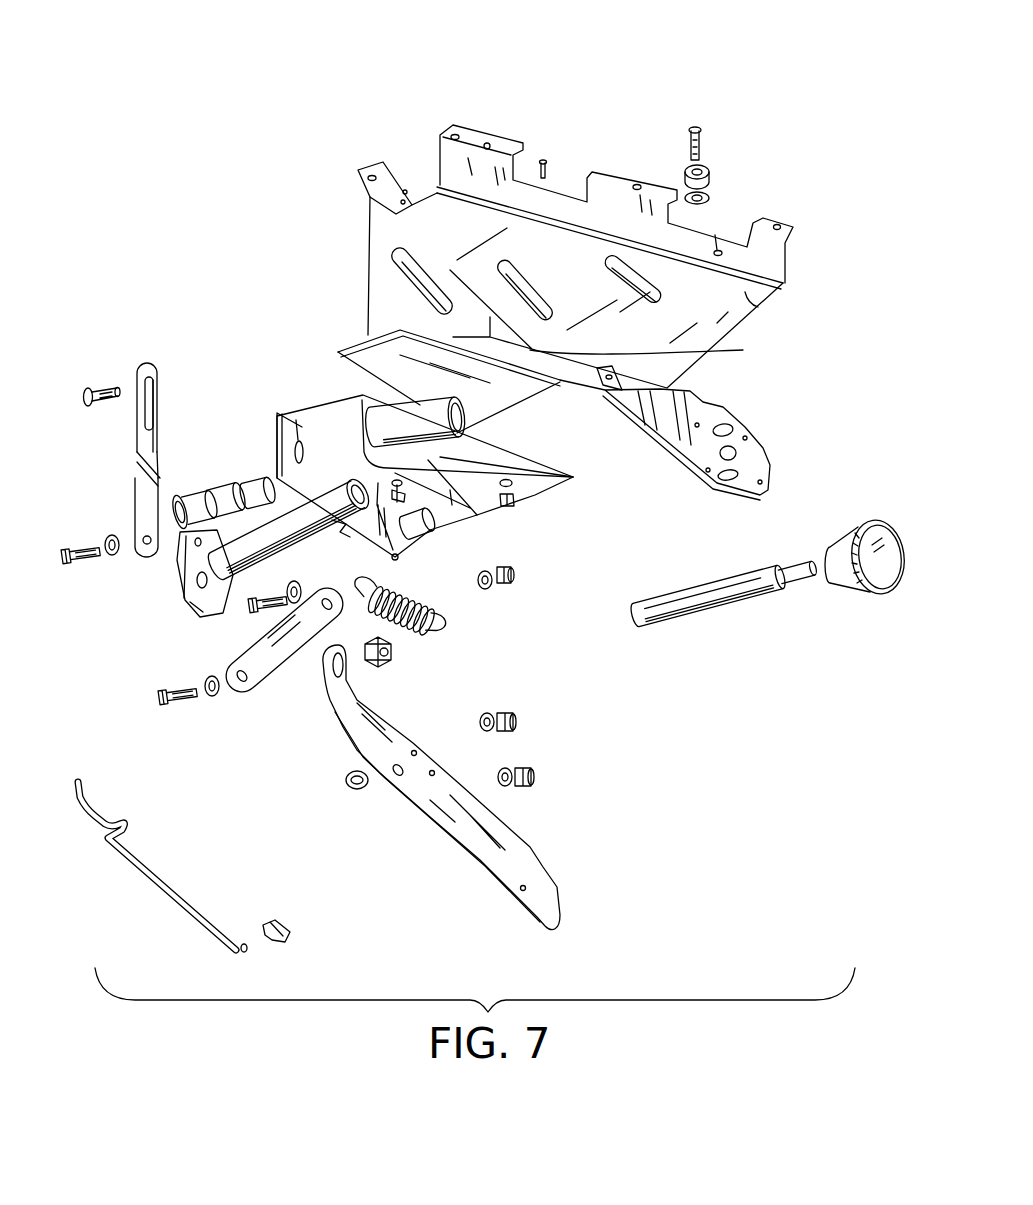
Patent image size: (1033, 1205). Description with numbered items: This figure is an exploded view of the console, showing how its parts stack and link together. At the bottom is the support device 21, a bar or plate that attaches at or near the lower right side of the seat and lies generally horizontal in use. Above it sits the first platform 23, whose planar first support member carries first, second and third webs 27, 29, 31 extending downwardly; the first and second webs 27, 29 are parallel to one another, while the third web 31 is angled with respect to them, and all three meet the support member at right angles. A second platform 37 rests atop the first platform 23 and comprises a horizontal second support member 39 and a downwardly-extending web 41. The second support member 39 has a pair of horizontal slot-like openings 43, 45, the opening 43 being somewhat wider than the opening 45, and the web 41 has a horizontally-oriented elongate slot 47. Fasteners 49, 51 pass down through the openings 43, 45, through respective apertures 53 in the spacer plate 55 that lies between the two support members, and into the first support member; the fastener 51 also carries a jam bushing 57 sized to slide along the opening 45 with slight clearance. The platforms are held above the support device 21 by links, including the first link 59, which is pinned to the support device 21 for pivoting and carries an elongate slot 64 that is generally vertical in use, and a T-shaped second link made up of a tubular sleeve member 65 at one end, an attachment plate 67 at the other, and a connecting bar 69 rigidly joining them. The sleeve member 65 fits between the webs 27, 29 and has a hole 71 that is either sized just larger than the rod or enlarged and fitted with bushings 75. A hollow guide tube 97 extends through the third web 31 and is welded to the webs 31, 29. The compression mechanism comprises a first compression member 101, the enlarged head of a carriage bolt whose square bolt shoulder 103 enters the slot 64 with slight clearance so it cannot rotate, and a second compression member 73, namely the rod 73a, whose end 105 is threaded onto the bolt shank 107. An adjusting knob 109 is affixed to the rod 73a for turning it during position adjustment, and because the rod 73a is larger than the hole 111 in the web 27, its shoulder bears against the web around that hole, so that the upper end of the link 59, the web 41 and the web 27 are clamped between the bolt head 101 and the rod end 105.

The support device 21 is at (492, 857).
The first platform 23 is at (567, 470).
The first web 27 is at (455, 479).
The second web 29 is at (520, 507).
The third web 31 is at (543, 455).
The second platform 37 is at (575, 256).
The second support member 39 is at (758, 307).
The web 41 is at (377, 228).
The opening 43 is at (535, 300).
The opening 45 is at (650, 292).
The elongate slot 47 is at (395, 265).
The fastener 49 is at (545, 160).
The fastener 51 is at (690, 128).
The aperture 53 is at (660, 389).
The spacer plate 55 is at (743, 350).
The jam bushing 57 is at (704, 170).
The first link 59 is at (157, 450).
The elongate slot 64 is at (150, 375).
The tubular sleeve member 65 is at (269, 420).
The attachment plate 67 is at (180, 575).
The connecting bar 69 is at (233, 600).
The hole 71 is at (360, 532).
The second compression member 73 is at (746, 596).
The rod 73a is at (697, 613).
The bushings 75 is at (200, 490).
The hollow guide tube 97 is at (415, 405).
The first compression member 101 is at (87, 398).
The square bolt shoulder 103 is at (90, 392).
The end 105 is at (633, 613).
The bolt shank 107 is at (117, 392).
The adjusting knob 109 is at (890, 597).
The hole 111 is at (299, 441).